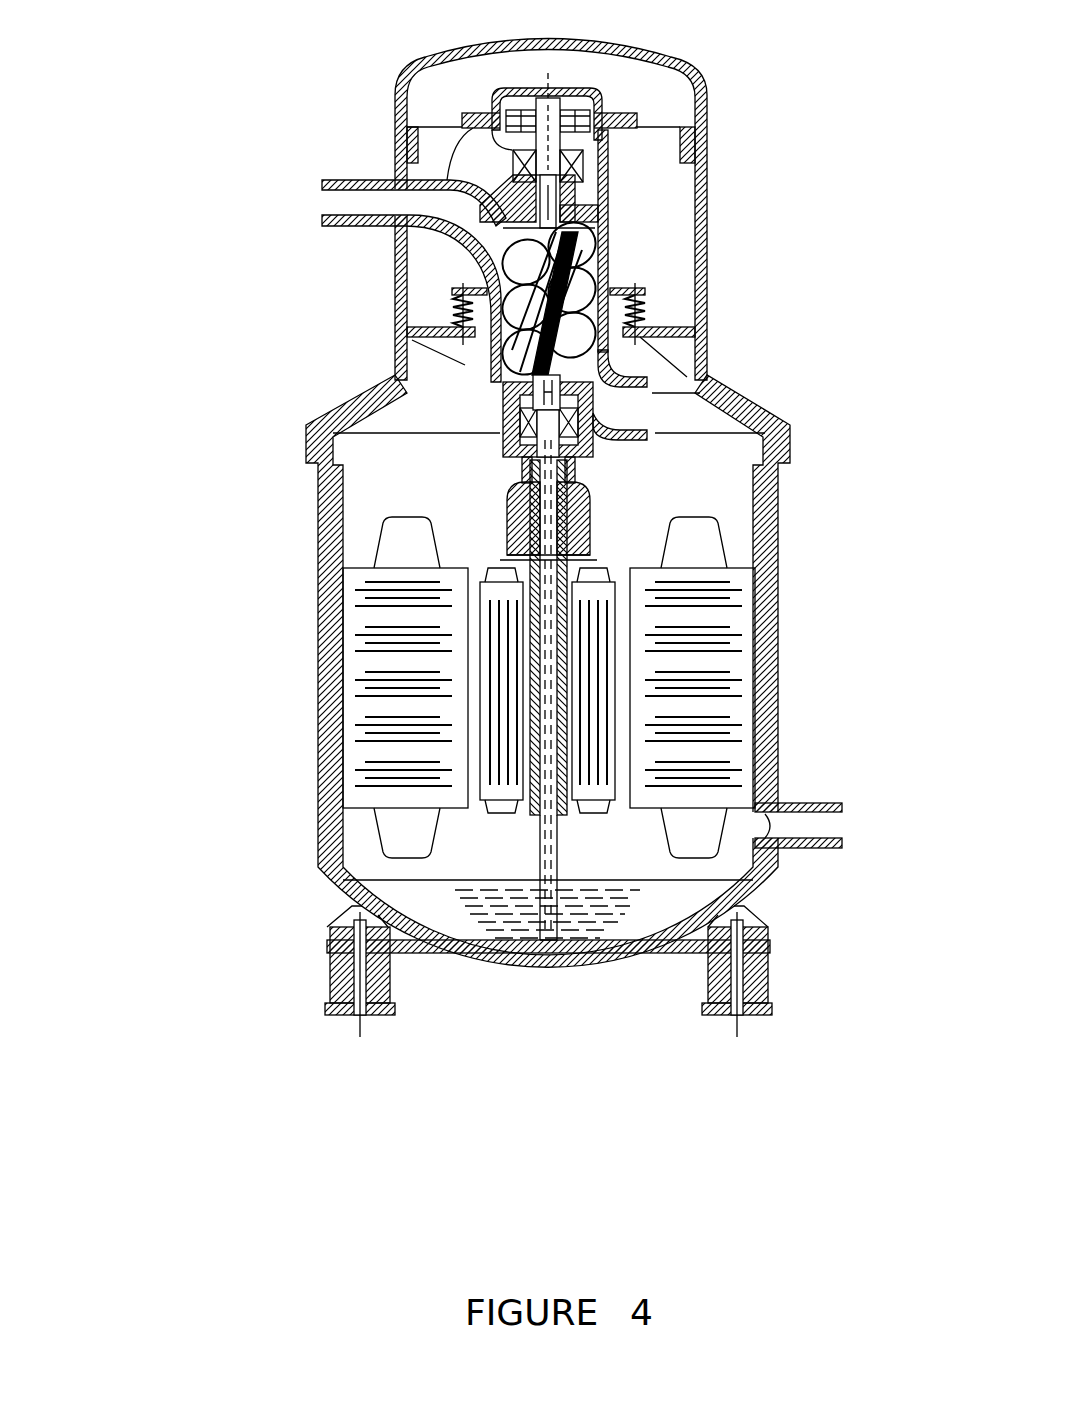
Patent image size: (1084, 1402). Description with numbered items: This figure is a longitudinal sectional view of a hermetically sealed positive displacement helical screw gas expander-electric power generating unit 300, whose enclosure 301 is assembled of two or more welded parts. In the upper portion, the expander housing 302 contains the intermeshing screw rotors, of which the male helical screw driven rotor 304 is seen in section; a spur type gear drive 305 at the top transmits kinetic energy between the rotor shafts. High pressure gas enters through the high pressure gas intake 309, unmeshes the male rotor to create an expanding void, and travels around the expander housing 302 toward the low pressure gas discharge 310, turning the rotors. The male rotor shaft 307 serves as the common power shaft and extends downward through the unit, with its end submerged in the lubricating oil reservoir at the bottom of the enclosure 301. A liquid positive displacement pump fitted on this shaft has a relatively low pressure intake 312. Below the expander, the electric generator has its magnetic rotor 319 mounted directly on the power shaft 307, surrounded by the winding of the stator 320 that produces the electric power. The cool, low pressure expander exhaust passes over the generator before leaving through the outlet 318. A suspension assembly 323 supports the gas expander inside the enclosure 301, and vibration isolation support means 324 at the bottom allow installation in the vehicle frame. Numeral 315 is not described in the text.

The helical screw gas expander-electric power generating unit 300 is at (165, 1091).
The enclosure 301 is at (316, 760).
The expander housing 302 is at (616, 216).
The male helical screw driven rotor 304 is at (500, 347).
The spur type gear drive 305 is at (584, 95).
The male rotor shaft 307 is at (560, 874).
The high pressure gas intake 309 is at (353, 226).
The low pressure gas discharge 310 is at (650, 410).
The low pressure intake 312 is at (590, 515).
The shaft 315 is at (522, 490).
The outlet 318 is at (800, 802).
The magnetic rotor 319 is at (503, 565).
The stator 320 is at (410, 520).
The suspension assembly 323 is at (648, 307).
The vibration isolation support means 324 is at (355, 1025).